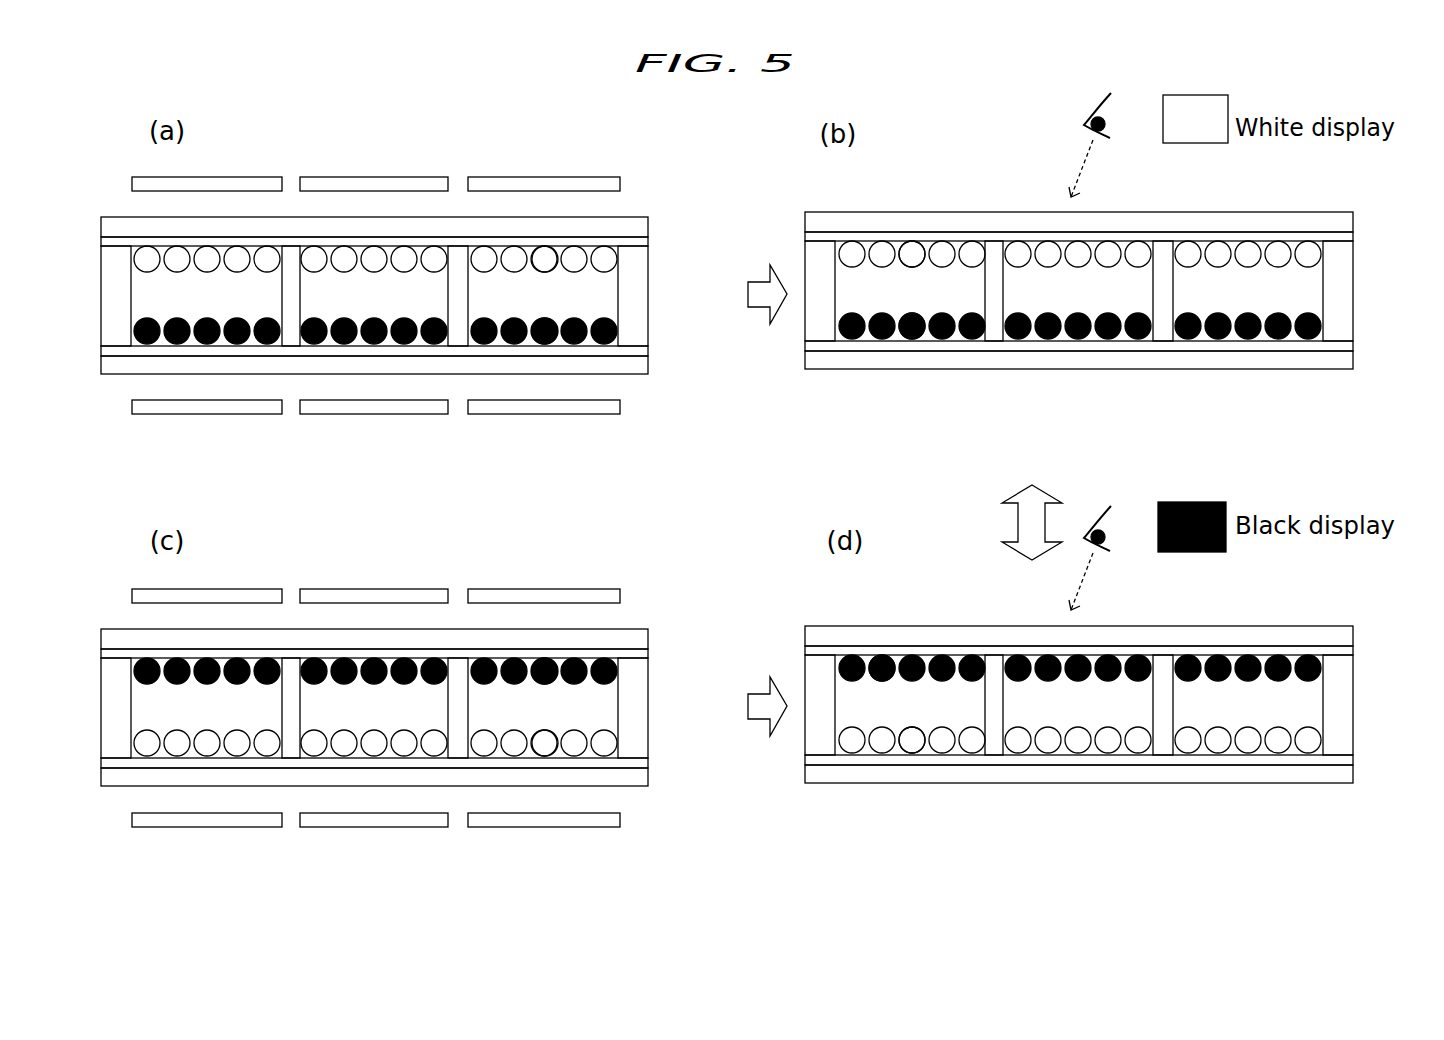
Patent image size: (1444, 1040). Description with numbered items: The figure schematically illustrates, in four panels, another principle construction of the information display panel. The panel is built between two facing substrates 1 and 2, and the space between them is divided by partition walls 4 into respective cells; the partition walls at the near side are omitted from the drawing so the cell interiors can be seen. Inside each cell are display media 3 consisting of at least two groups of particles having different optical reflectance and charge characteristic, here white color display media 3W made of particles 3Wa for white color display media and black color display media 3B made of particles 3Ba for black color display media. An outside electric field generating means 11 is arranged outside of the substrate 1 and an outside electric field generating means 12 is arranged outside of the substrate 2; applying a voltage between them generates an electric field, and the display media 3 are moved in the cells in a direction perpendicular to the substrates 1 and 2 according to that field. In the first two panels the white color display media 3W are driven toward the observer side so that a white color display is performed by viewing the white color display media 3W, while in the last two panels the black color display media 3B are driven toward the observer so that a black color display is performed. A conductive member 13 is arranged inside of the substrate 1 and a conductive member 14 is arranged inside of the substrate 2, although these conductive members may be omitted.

The substrate 1 is at (292, 363).
The substrate 2 is at (290, 225).
The display media 3 is at (693, 252).
The white color display media 3W is at (655, 246).
The black color display media 3B is at (655, 317).
The particles for white color display media 3Wa is at (546, 252).
The particles for black color display media 3Ba is at (552, 343).
The partition wall 4 is at (118, 330).
The outside electric field generating means 11 is at (378, 410).
The outside electric field generating means 12 is at (372, 183).
The conductive member 13 is at (462, 355).
The conductive member 14 is at (458, 243).